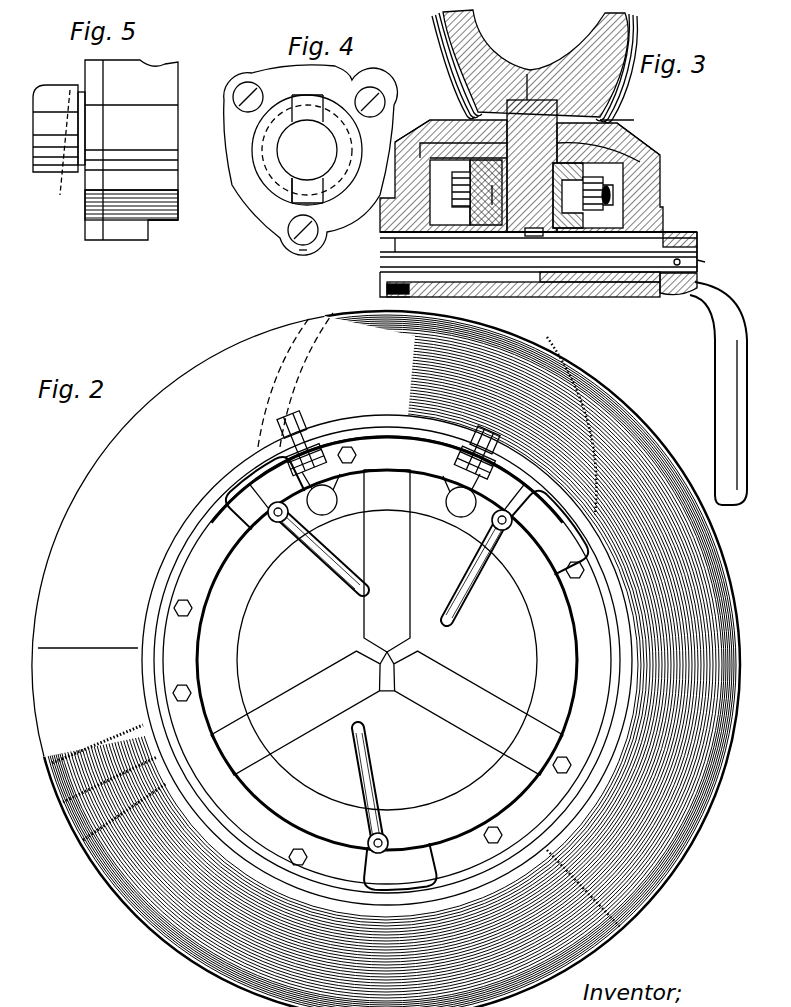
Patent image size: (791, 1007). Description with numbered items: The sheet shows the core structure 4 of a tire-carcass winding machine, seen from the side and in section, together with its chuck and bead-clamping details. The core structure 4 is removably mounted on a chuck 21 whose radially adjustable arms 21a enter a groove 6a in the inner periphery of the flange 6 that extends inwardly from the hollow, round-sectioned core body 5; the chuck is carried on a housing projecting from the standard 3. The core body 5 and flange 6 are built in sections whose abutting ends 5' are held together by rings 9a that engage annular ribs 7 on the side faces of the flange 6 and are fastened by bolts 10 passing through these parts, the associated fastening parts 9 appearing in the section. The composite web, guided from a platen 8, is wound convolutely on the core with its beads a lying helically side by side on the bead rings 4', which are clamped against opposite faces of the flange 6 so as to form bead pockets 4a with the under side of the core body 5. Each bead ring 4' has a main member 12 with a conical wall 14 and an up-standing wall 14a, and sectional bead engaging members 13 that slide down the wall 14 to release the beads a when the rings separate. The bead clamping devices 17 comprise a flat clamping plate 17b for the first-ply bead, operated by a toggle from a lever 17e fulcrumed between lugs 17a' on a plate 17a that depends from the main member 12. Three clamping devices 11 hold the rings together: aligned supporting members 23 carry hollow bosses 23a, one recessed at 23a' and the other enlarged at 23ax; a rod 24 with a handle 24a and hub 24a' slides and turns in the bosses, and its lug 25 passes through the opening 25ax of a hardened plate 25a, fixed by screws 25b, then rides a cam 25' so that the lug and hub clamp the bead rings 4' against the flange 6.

In FIG. 2, the standard 3 is at (532, 470).
In FIG. 2, the core structure 4 is at (386, 659).
In FIG. 3, the bead rings 4' is at (527, 126).
In FIG. 2, the bead rings 4' is at (379, 660).
In FIG. 3, the bead pockets 4a is at (487, 93).
In FIG. 2, the core body 5 is at (167, 457).
In FIG. 2, the abutting ends 5' is at (172, 494).
In FIG. 3, the flange 6 is at (521, 205).
In FIG. 3, the groove 6a is at (528, 236).
In FIG. 3, the annular ribs 7 is at (465, 212).
In FIG. 2, the platen 8 is at (488, 440).
In FIG. 3, the nut 9 is at (455, 172).
In FIG. 3, the rings 9a is at (608, 190).
In FIG. 3, the bolts 10 is at (613, 193).
In FIG. 2, the bolts 10 is at (186, 688).
In FIG. 3, the clamping devices 11 is at (713, 272).
In FIG. 2, the clamping devices 11 is at (384, 677).
In FIG. 3, the main member 12 is at (452, 122).
In FIG. 2, the main member 12 is at (213, 495).
In FIG. 3, the bead engaging members 13 is at (470, 116).
In FIG. 3, the conical wall 14 is at (428, 142).
In FIG. 3, the up-standing wall 14a is at (617, 126).
In FIG. 2, the bead clamping devices 17 is at (474, 478).
In FIG. 2, the plate 17a is at (386, 480).
In FIG. 2, the lugs 17a' is at (409, 471).
In FIG. 2, the clamping plate 17b is at (328, 412).
In FIG. 2, the lever 17e is at (391, 506).
In FIG. 2, the chuck 21 is at (362, 643).
In FIG. 2, the arms 21a is at (405, 703).
In FIG. 5, the supporting member 23 is at (158, 76).
In FIG. 3, the supporting member 23 is at (668, 210).
In FIG. 2, the supporting member 23 is at (254, 505).
In FIG. 5, the hollow bosses 23a is at (166, 237).
In FIG. 3, the hollow bosses 23a is at (523, 296).
In FIG. 3, the recess 23a' is at (624, 304).
In FIG. 4, the enlarged opening 23ax is at (303, 222).
In FIG. 3, the enlarged opening 23ax is at (443, 272).
In FIG. 3, the rod 24 is at (699, 252).
In FIG. 2, the rod 24 is at (270, 506).
In FIG. 3, the handle 24a is at (724, 393).
In FIG. 2, the handle 24a is at (390, 677).
In FIG. 3, the hub 24a' is at (703, 233).
In FIG. 2, the hub 24a' is at (366, 677).
In FIG. 4, the lug 25 is at (311, 160).
In FIG. 3, the lug 25 is at (351, 263).
In FIG. 5, the cam 25' is at (59, 126).
In FIG. 5, the plate 25a is at (85, 202).
In FIG. 3, the plate 25a is at (378, 285).
In FIG. 4, the bushing key 25ax is at (296, 204).
In FIG. 4, the screws 25b is at (247, 82).
In FIG. 3, the screws 25b is at (412, 292).
In FIG. 3, the beads a is at (568, 112).